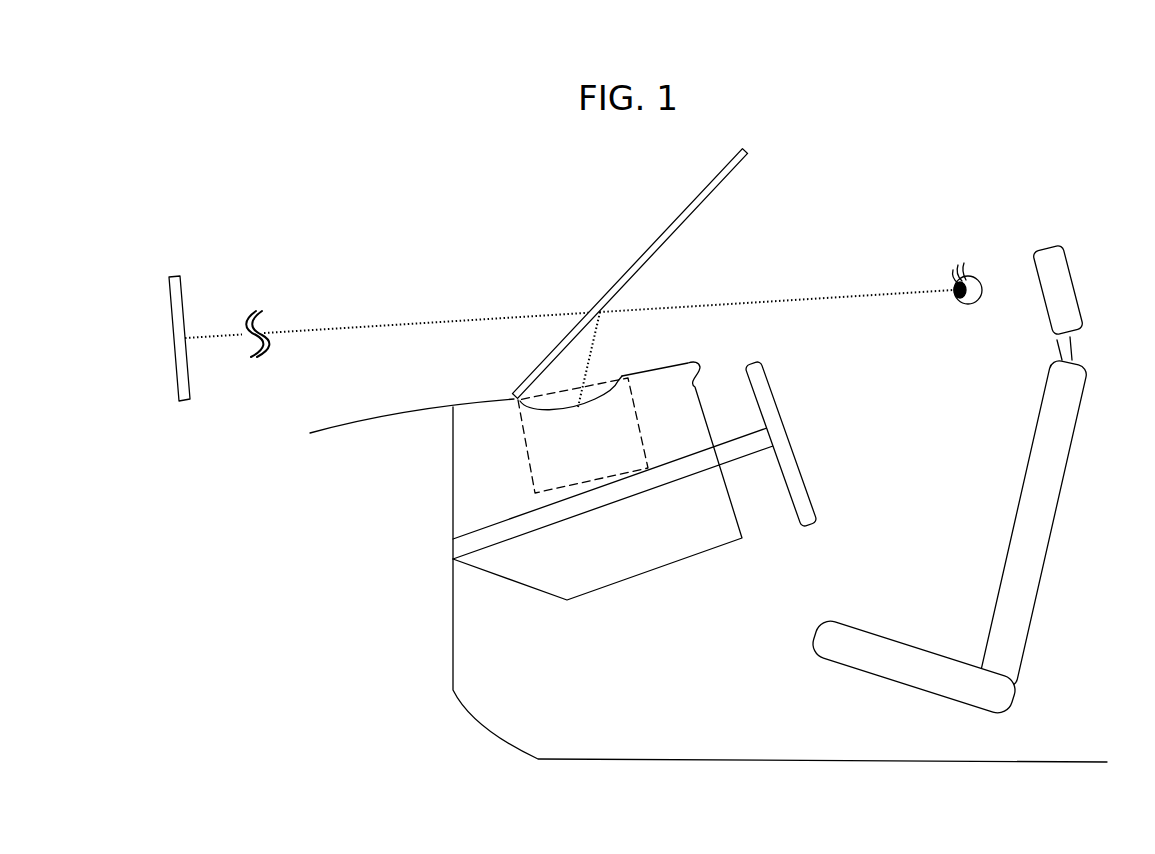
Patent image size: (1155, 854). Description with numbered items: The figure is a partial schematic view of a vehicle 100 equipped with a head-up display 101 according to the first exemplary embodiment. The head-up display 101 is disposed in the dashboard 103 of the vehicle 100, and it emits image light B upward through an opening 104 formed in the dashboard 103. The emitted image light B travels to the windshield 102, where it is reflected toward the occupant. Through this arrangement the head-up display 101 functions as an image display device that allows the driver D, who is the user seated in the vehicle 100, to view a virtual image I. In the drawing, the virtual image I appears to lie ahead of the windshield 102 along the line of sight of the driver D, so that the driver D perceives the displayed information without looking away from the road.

The vehicle 100 is at (628, 758).
The head-up display 101 is at (522, 430).
The windshield 102 is at (645, 250).
The dashboard 103 is at (697, 360).
The opening 104 is at (517, 400).
The image light B is at (567, 407).
The driver D is at (972, 277).
The virtual image I is at (183, 303).